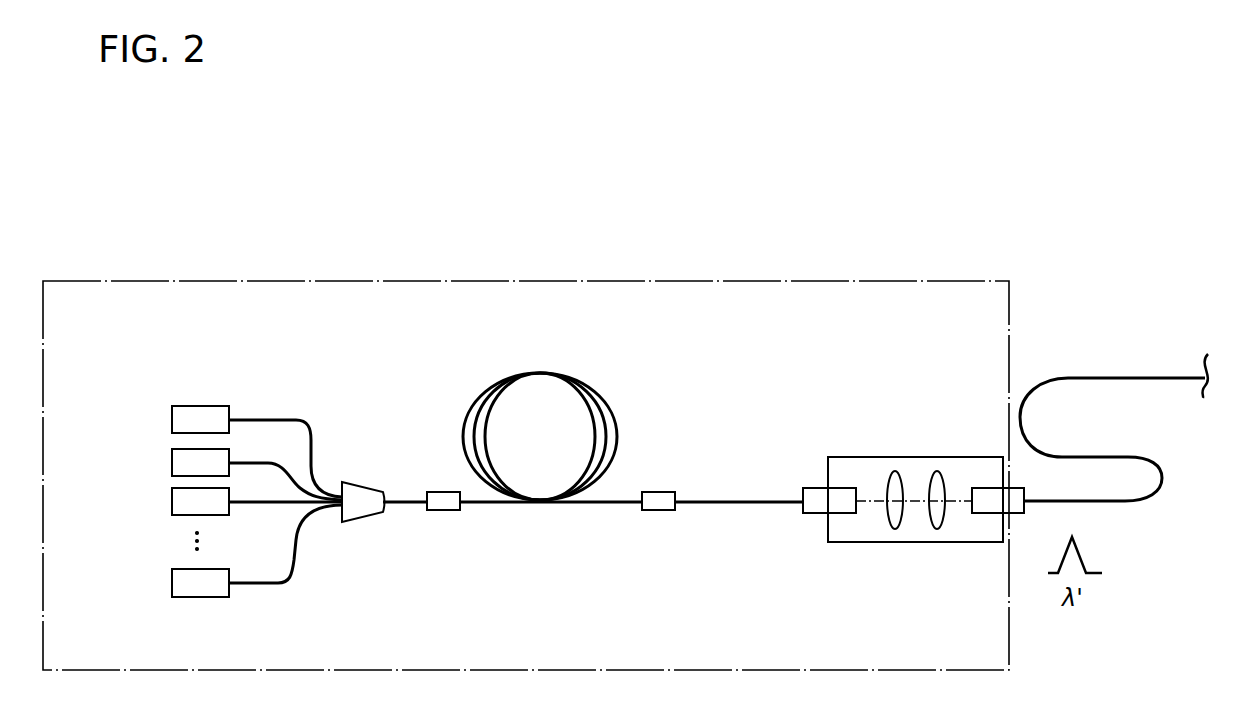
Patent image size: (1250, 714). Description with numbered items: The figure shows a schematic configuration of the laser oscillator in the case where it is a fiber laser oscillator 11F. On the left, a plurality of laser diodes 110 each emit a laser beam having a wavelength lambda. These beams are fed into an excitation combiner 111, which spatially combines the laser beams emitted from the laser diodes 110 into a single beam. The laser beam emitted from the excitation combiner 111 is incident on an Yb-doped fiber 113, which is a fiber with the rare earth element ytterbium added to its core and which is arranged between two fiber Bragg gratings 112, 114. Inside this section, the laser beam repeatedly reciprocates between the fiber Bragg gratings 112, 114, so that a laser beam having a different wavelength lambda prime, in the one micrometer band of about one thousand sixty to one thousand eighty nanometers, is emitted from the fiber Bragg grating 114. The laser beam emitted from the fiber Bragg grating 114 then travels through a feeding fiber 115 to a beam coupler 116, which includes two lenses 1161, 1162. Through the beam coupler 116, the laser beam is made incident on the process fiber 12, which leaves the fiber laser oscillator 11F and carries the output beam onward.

The fiber laser oscillator 11F is at (730, 281).
The laser diodes 110 is at (207, 449).
The excitation combiner 111 is at (354, 482).
The fiber Bragg grating 112 is at (440, 511).
The Yb-doped fiber 113 is at (580, 375).
The fiber Bragg grating 114 is at (655, 511).
The feeding fiber 115 is at (748, 498).
The beam coupler 116 is at (913, 508).
The lens 1161 is at (892, 529).
The lens 1162 is at (935, 529).
The process fiber 12 is at (1102, 377).